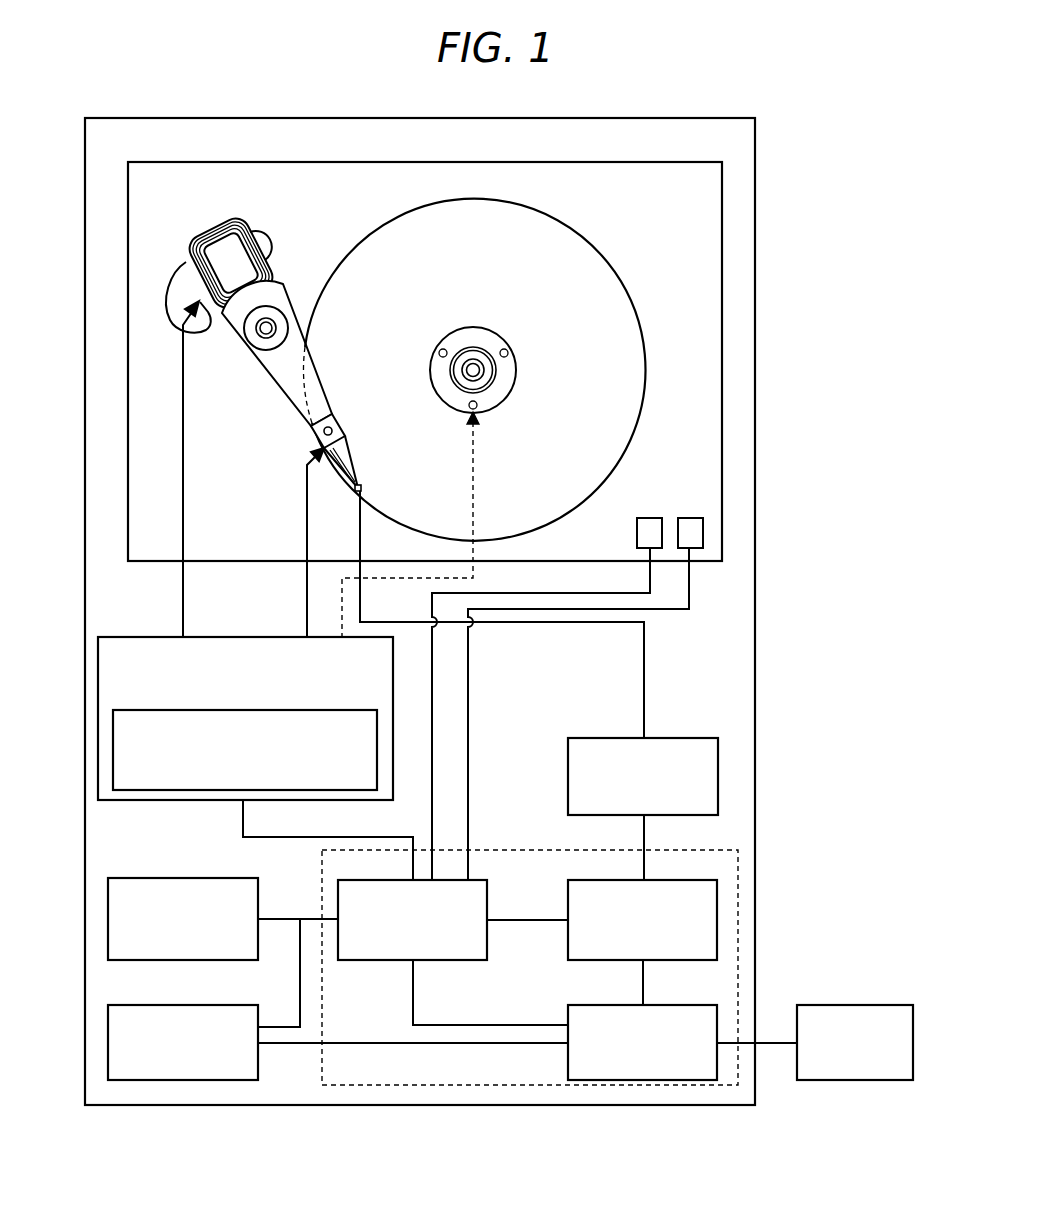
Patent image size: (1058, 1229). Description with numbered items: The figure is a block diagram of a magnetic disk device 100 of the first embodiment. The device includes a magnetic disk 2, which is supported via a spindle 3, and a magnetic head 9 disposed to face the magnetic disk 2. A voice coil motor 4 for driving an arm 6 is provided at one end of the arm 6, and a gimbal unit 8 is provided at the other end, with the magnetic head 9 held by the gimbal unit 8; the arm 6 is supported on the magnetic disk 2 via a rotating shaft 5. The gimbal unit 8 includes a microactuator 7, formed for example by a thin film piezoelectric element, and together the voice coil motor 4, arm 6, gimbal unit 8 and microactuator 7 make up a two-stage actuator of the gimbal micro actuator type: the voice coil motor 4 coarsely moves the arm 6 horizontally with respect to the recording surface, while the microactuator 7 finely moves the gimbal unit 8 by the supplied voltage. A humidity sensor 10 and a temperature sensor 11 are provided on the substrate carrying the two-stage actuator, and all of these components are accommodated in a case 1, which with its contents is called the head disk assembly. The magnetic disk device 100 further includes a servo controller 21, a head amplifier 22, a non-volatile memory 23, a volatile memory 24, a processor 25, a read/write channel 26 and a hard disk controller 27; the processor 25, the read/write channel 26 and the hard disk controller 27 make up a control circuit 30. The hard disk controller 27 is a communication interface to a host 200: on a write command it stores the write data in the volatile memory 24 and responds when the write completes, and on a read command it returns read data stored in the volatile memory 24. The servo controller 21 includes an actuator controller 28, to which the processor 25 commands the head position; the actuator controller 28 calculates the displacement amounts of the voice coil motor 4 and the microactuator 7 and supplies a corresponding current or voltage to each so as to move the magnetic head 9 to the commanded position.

The magnetic disk device 100 is at (695, 118).
The case 1 is at (663, 161).
The magnetic disk 2 is at (334, 270).
The spindle 3 is at (500, 370).
The voice coil motor 4 is at (272, 246).
The rotating shaft 5 is at (275, 351).
The arm 6 is at (326, 385).
The microactuator 7 is at (340, 429).
The gimbal unit 8 is at (356, 466).
The magnetic head 9 is at (366, 488).
The humidity sensor 10 is at (650, 518).
The temperature sensor 11 is at (690, 518).
The servo controller 21 is at (100, 637).
The actuator controller 28 is at (300, 710).
The head amplifier 22 is at (666, 720).
The non-volatile memory 23 is at (208, 860).
The volatile memory 24 is at (200, 1005).
The processor 25 is at (358, 862).
The read/write channel (RWC) 26 is at (670, 862).
The hard disk controller (HDC) 27 is at (662, 1005).
The control circuit 30 is at (680, 850).
The host 200 is at (856, 1005).